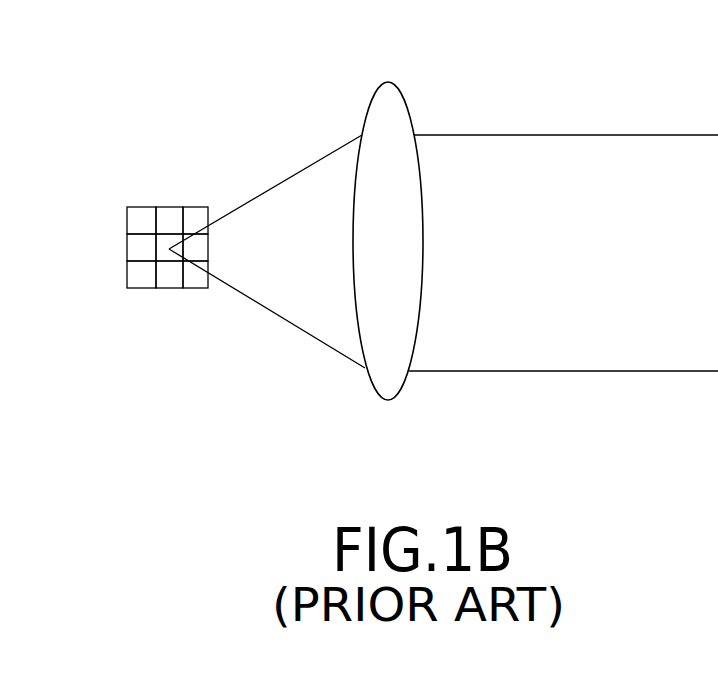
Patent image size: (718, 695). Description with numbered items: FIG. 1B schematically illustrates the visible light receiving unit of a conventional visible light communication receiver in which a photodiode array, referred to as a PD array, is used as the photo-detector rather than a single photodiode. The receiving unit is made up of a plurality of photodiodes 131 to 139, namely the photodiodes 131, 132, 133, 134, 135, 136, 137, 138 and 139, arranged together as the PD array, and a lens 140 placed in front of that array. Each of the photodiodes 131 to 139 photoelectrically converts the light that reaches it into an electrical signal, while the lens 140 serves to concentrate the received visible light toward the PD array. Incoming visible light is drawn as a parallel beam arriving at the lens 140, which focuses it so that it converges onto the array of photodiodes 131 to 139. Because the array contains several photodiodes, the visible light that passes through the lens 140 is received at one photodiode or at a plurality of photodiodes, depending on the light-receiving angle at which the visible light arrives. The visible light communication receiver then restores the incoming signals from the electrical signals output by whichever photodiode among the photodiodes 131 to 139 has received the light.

The photodiode 131 is at (127, 221).
The photodiode 132 is at (167, 207).
The photodiode 133 is at (197, 207).
The photodiode 134 is at (127, 248).
The photodiode 135 is at (165, 250).
The photodiode 136 is at (195, 247).
The photodiode 137 is at (127, 274).
The photodiode 138 is at (163, 289).
The photodiode 139 is at (206, 289).
The lens 140 is at (388, 82).